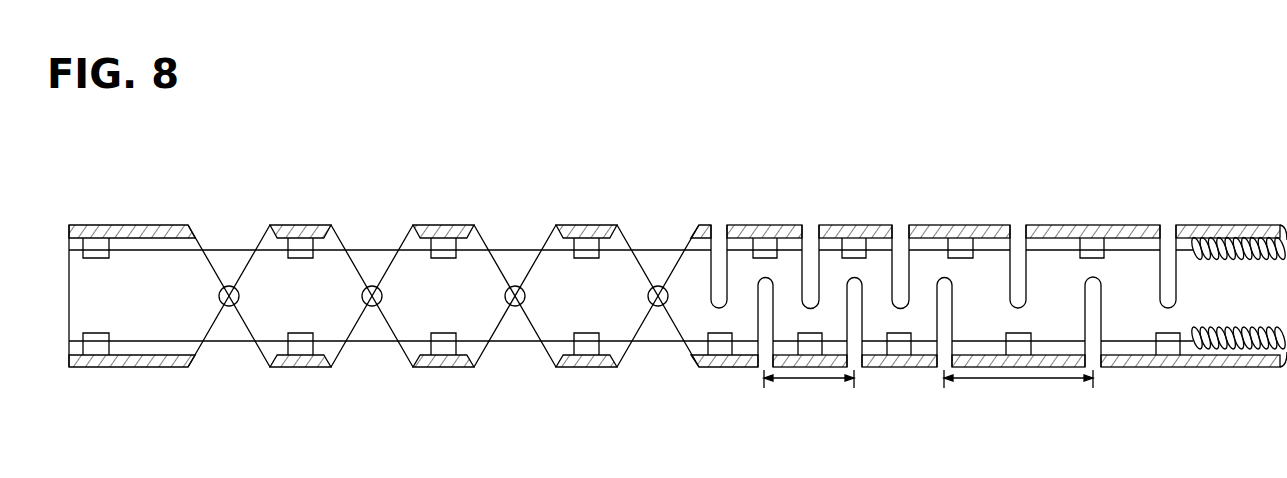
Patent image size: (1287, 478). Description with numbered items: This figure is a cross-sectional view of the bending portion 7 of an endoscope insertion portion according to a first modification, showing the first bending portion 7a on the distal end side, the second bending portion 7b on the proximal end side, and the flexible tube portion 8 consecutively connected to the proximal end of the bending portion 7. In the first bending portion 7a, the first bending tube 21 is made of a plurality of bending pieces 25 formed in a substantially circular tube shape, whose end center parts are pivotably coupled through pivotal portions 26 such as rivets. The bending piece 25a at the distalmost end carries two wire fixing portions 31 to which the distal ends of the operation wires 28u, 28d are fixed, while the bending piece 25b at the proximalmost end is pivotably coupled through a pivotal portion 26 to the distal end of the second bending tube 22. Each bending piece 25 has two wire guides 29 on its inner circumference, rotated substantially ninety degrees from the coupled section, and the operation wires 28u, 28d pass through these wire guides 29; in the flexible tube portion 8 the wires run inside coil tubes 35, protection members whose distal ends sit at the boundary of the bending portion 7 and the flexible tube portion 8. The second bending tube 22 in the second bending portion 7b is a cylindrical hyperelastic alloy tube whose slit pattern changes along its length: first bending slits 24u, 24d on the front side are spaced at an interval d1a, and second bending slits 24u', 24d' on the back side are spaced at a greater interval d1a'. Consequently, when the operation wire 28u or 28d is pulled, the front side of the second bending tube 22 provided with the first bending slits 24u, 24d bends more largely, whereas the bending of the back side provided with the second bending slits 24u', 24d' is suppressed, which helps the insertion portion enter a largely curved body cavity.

The bending portion 7 is at (645, 128).
The first bending portion 7a is at (643, 160).
The second bending portion 7b is at (1165, 160).
The flexible tube portion 8 is at (1263, 293).
The first bending tube 21 is at (67, 405).
The second bending tube 22 is at (672, 405).
The first bending slit 24u is at (810, 234).
The first bending slit 24d is at (855, 342).
The second bending slit 24u' is at (1093, 232).
The second bending slit 24d' is at (1110, 341).
The bending piece 25 is at (427, 303).
The bending piece at distalmost end 25a is at (162, 303).
The bending piece at proximalmost end 25b is at (562, 303).
The pivotal portion 26 is at (232, 280).
The operation wire 28u is at (657, 250).
The operation wire 28d is at (660, 343).
The wire guide 29 is at (302, 245).
The wire fixing portion 31 is at (98, 245).
The coil tube 35 is at (1250, 248).
The interval of first bending slits d1a is at (809, 387).
The interval of second bending slits d1a' is at (1018, 386).